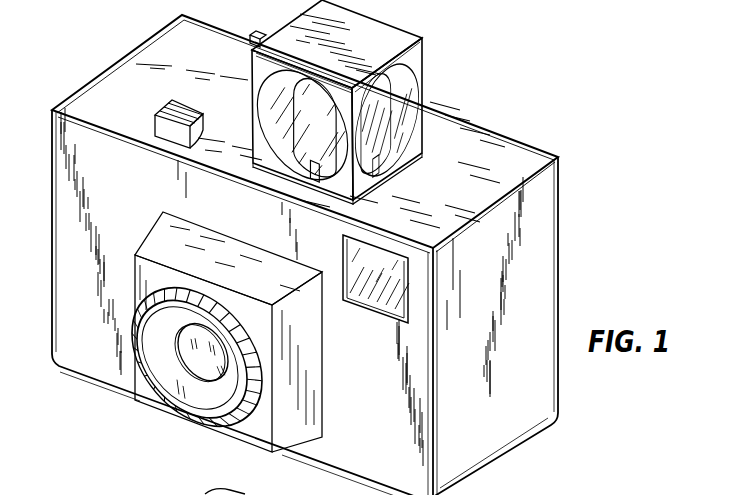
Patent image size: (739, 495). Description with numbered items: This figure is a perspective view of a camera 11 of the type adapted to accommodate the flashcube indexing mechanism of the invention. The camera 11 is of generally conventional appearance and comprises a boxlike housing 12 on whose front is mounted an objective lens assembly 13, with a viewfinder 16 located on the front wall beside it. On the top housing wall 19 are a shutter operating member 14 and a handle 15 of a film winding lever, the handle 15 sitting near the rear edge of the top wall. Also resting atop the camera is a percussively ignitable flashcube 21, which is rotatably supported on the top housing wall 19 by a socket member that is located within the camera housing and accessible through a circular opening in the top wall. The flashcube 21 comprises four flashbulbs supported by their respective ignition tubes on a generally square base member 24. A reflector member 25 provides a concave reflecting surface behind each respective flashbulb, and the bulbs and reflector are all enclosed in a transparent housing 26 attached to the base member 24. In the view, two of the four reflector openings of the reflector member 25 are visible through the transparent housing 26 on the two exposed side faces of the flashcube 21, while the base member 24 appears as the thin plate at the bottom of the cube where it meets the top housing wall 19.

The camera 11 is at (568, 202).
The boxlike housing 12 is at (527, 293).
The objective lens assembly 13 is at (204, 360).
The shutter operating member 14 is at (158, 124).
The handle of a film winding lever 15 is at (253, 36).
The viewfinder 16 is at (392, 293).
The top housing wall 19 is at (473, 145).
The percussively ignitable flashcube 21 is at (363, 102).
The base member 24 is at (408, 163).
The reflector member 25 is at (412, 90).
The transparent housing 26 is at (385, 35).